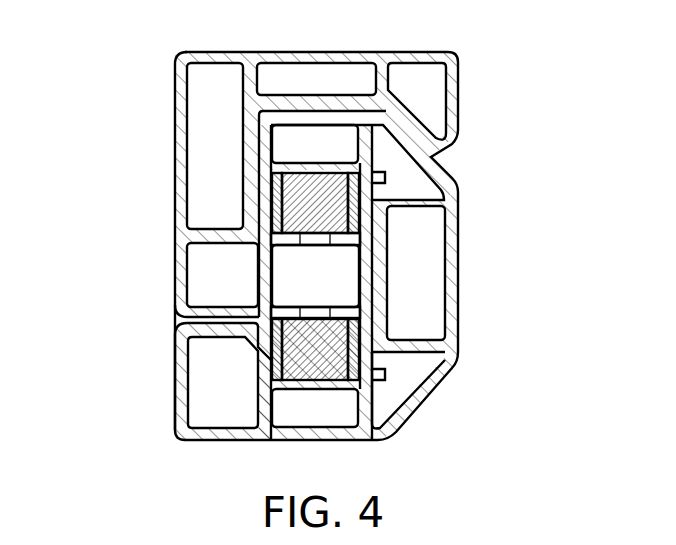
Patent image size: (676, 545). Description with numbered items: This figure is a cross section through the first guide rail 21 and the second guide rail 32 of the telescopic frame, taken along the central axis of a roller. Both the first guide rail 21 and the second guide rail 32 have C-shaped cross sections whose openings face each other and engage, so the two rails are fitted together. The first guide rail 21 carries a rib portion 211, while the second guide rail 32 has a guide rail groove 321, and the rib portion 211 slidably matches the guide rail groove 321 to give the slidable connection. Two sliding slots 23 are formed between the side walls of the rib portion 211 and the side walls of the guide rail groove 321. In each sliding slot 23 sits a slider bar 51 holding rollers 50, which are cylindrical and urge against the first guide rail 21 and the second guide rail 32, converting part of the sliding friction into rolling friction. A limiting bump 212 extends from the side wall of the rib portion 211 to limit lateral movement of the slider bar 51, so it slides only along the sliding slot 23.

The first guide rail 21 is at (182, 140).
The rib portion 211 is at (368, 288).
The limiting bump 212 is at (371, 221).
The sliding slot 23 is at (378, 200).
The second guide rail 32 is at (450, 249).
The guide rail groove 321 is at (300, 274).
The roller 50 is at (295, 182).
The slider bar 51 is at (272, 203).